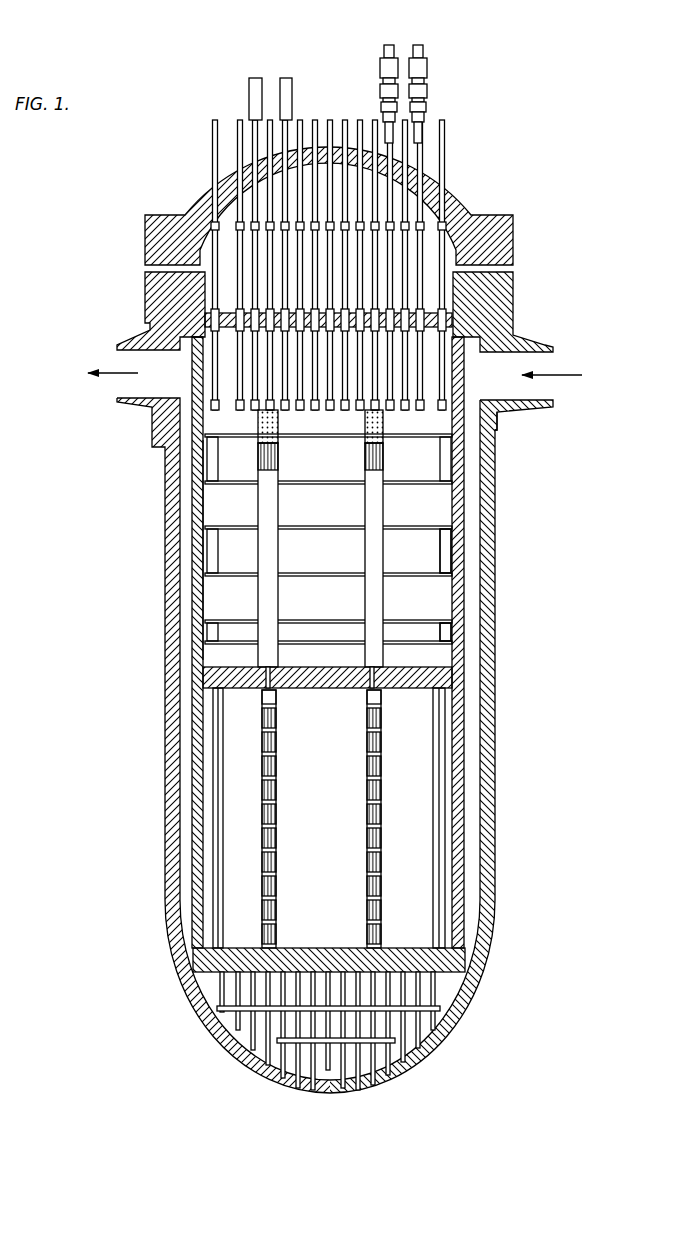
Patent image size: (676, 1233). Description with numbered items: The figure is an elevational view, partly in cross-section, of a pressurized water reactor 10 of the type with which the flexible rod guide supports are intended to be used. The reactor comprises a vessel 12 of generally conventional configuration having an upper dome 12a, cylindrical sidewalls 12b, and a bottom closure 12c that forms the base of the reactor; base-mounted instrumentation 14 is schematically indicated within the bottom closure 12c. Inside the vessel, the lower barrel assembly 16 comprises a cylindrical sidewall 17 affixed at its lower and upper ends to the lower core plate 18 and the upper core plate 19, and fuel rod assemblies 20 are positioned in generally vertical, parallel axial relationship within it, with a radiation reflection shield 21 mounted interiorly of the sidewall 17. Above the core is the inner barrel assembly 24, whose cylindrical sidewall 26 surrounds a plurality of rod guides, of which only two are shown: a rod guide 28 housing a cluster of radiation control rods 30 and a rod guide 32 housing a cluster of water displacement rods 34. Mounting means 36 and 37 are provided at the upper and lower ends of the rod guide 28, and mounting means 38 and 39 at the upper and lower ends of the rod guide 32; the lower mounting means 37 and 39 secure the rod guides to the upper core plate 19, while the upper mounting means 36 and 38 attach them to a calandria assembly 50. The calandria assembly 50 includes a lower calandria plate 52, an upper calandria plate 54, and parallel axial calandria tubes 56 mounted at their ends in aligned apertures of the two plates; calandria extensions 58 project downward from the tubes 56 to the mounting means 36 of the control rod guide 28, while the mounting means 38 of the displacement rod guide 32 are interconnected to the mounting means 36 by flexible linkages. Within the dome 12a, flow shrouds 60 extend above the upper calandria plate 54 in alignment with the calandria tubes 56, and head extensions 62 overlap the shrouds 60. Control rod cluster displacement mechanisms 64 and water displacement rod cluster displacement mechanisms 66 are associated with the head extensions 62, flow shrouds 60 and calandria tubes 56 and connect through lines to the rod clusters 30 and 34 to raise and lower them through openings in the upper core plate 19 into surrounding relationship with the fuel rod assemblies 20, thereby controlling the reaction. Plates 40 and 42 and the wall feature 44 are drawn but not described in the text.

The pressurized water reactor 10 is at (569, 215).
The vessel 12 is at (335, 620).
The upper dome 12a is at (468, 204).
The cylindrical sidewalls 12b is at (497, 472).
The bottom closure 12c is at (465, 1010).
The base-mounted instrumentation 14 is at (412, 1062).
The lower barrel assembly 16 is at (190, 740).
The cylindrical sidewall 17 is at (196, 778).
The lower core plate 18 is at (196, 963).
The upper core plate 19 is at (205, 680).
The fuel rod assemblies 20 is at (366, 852).
The radiation reflection shield 21 is at (216, 826).
The inner barrel assembly 24 is at (198, 628).
The cylindrical sidewall 26 is at (197, 580).
The rod guide 28 is at (279, 512).
The radiation control rods 30 is at (279, 462).
The rod guide 32 is at (384, 512).
The water displacement rods 34 is at (384, 462).
The mounting means 36 is at (279, 418).
The mounting means 37 is at (260, 663).
The mounting means 38 is at (384, 418).
The mounting means 39 is at (398, 664).
The support plate 40 is at (446, 635).
The support plate 42 is at (446, 560).
The vessel wall ledge 44 is at (498, 445).
The calandria assembly 50 is at (186, 333).
The lower calandria plate 52 is at (200, 450).
The upper calandria plate 54 is at (232, 315).
The calandria tubes 56 is at (176, 400).
The calandria extensions 58 is at (192, 415).
The flow shrouds 60 is at (420, 264).
The head extensions 62 is at (446, 156).
The control rod cluster displacement mechanisms 64 is at (421, 47).
The water displacement rod cluster displacement mechanisms 66 is at (286, 78).